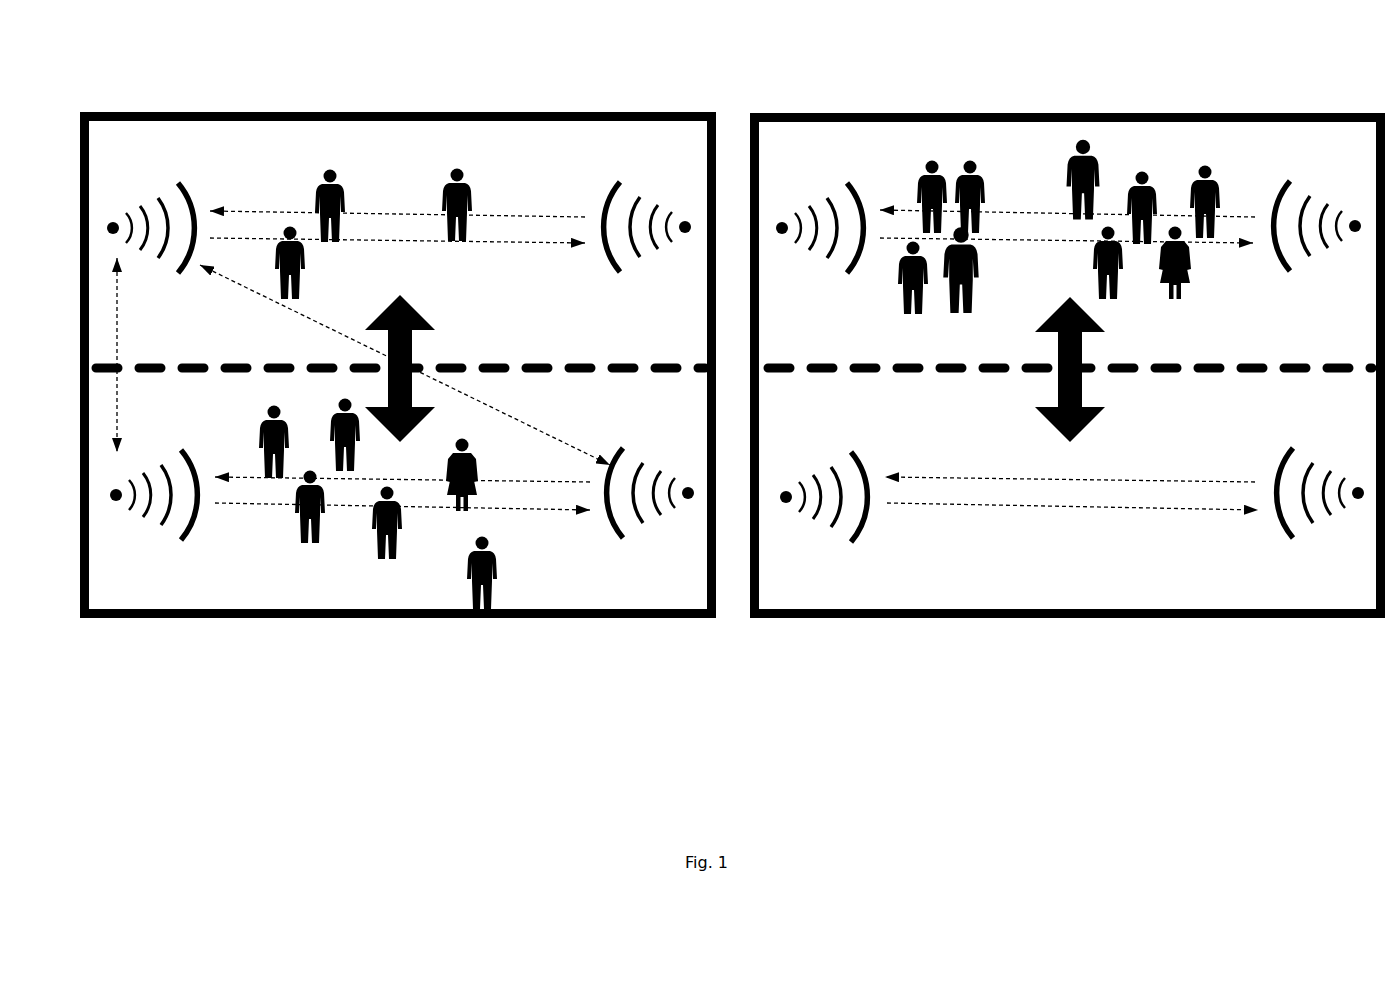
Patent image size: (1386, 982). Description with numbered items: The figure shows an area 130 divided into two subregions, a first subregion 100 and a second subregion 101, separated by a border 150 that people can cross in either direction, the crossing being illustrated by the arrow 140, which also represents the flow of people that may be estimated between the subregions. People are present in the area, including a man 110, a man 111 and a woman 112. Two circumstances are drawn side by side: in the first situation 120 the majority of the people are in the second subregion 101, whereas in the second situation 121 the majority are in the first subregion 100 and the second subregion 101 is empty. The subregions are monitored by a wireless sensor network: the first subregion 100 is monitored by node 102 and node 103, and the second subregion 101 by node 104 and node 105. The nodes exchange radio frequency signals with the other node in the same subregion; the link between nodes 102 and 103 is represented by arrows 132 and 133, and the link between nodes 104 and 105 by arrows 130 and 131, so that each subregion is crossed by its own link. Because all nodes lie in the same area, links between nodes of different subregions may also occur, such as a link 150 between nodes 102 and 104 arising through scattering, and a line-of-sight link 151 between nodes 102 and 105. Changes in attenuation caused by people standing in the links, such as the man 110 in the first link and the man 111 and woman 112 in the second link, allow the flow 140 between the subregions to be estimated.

The first subregion 100 is at (213, 147).
The second subregion 101 is at (238, 588).
The node 102 is at (148, 281).
The node 103 is at (632, 192).
The node 104 is at (132, 544).
The node 105 is at (660, 452).
The man 110 is at (345, 200).
The man 111 is at (300, 528).
The woman 112 is at (478, 470).
The first situation 120 is at (388, 652).
The second situation 121 is at (1050, 662).
The area 130 is at (517, 512).
The arrow 131 is at (520, 484).
The arrow 132 is at (485, 246).
The arrow 133 is at (490, 218).
The arrow 140 is at (428, 316).
The border 150 is at (235, 370).
The communication link 151 is at (505, 420).